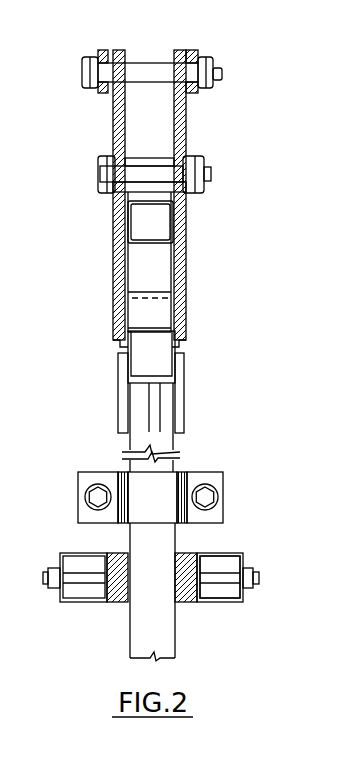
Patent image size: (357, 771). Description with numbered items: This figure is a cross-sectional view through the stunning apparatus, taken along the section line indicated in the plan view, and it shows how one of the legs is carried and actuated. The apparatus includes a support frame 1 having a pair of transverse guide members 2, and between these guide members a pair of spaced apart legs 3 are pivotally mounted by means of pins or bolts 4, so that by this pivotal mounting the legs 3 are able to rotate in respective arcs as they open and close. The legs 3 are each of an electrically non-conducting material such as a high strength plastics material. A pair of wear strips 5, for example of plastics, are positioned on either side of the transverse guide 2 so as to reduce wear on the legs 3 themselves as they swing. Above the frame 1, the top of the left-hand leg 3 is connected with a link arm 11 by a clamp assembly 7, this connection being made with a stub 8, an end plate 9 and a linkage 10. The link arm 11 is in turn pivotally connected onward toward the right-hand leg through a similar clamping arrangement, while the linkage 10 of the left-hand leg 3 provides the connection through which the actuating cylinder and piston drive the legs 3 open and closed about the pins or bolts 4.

The support frame 1 is at (162, 230).
The transverse guide members 2 is at (83, 602).
The legs 3 is at (168, 635).
The pins or bolts 4 is at (225, 577).
The wear strips 5 is at (177, 598).
The clamp assembly 7 is at (180, 475).
The stub 8 is at (162, 350).
The end plate 9 is at (162, 290).
The linkage 10 is at (186, 283).
The link arm 11 is at (192, 55).